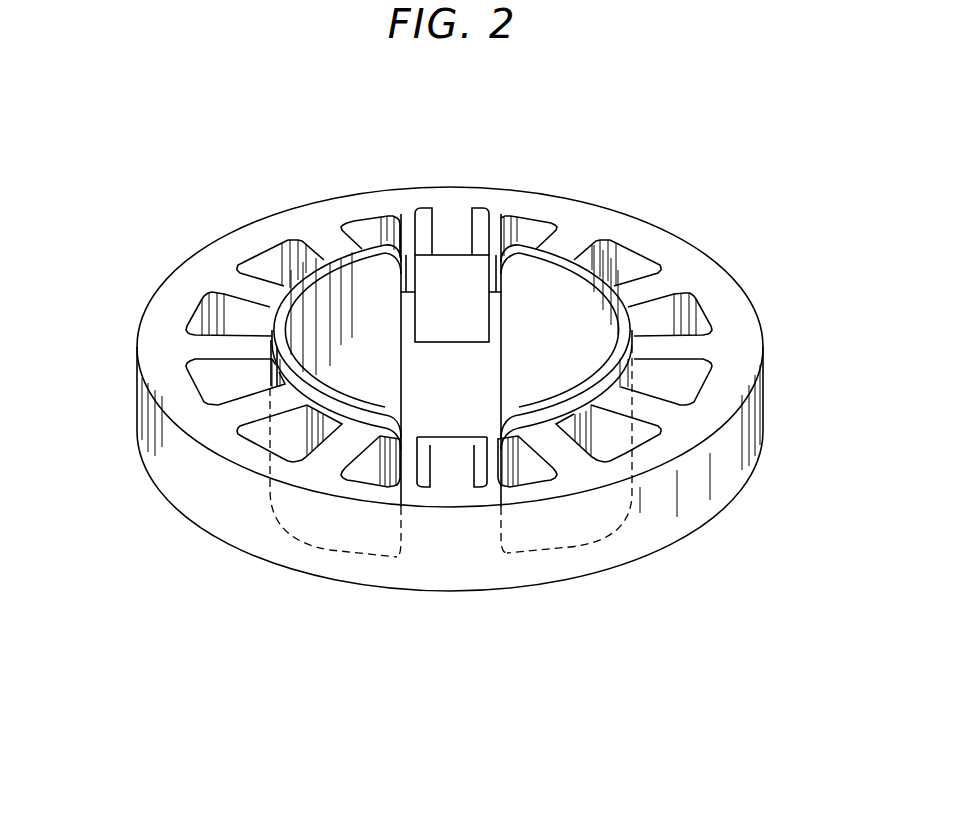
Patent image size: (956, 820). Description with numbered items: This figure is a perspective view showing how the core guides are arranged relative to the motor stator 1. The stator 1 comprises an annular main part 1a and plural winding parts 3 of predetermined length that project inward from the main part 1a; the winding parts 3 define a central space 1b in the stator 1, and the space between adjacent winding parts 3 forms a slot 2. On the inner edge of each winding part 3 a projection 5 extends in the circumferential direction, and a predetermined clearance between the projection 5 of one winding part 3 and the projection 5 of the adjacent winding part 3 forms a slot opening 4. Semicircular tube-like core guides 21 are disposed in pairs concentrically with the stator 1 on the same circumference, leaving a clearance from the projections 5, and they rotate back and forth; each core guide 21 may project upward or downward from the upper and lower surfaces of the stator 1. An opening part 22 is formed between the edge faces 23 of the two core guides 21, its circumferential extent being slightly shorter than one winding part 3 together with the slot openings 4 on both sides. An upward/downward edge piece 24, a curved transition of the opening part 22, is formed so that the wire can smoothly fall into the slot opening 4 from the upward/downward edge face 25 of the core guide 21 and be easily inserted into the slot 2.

The motor stator 1 is at (460, 396).
The annular main part 1a is at (195, 272).
The space 1b is at (448, 408).
The slot 2 is at (710, 328).
The winding part 3 is at (650, 403).
The slot opening 4 is at (581, 421).
The projection 5 is at (479, 253).
The core guide 21 is at (472, 385).
The opening part 22 is at (412, 246).
The edge face 23 is at (396, 252).
The upward/downward edge piece 24 is at (504, 252).
The upward/downward edge face 25 is at (330, 252).